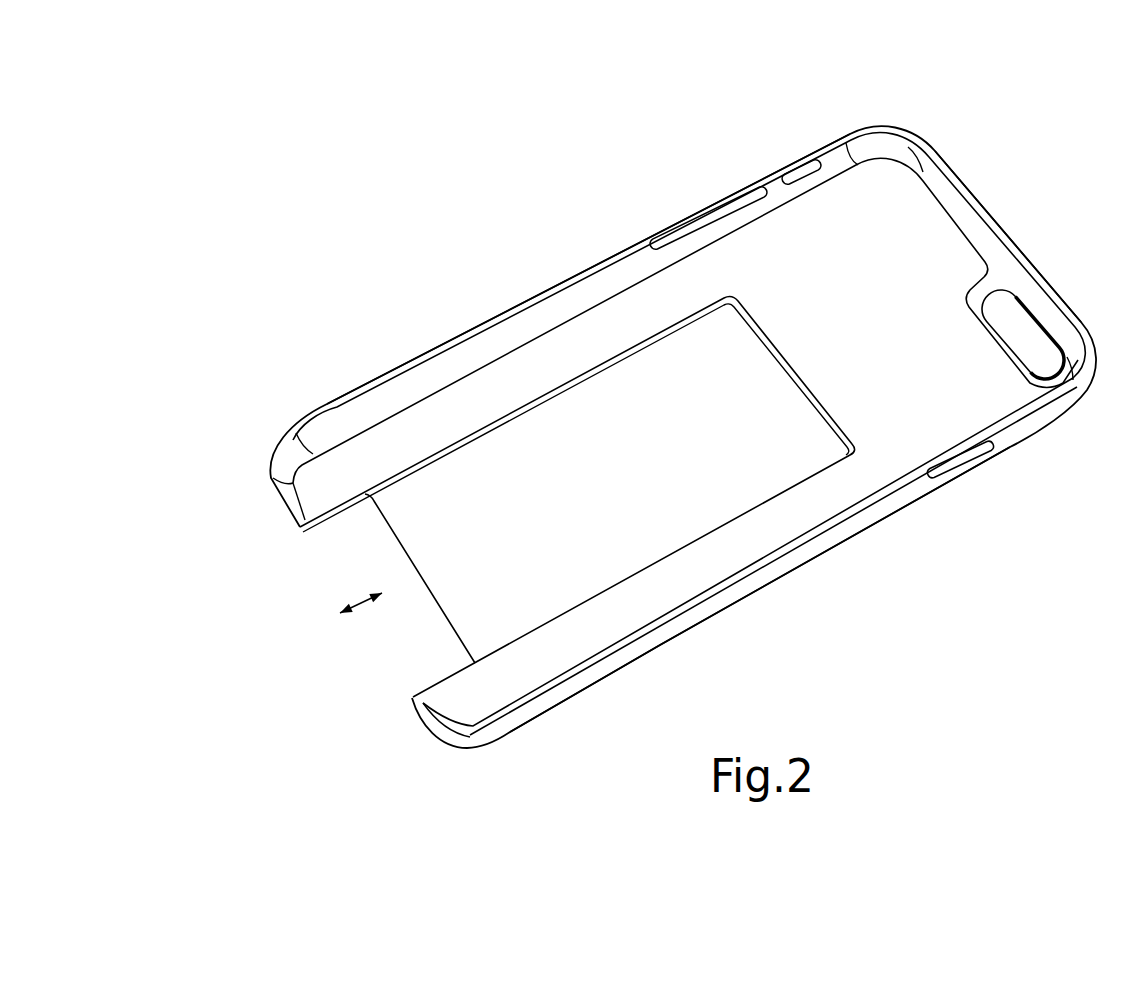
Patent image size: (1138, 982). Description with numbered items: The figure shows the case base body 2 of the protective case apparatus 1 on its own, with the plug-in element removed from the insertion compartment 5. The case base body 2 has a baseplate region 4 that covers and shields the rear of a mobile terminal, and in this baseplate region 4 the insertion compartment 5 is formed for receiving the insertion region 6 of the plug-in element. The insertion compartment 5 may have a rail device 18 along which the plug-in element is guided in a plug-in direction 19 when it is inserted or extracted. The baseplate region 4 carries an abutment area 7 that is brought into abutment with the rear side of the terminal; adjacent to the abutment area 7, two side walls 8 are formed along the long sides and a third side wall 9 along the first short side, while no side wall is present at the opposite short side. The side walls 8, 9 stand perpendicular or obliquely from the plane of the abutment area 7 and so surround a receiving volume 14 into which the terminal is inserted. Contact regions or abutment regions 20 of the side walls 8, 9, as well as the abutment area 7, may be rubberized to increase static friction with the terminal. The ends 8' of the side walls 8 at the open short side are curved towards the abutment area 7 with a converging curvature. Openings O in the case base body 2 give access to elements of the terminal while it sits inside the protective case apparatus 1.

The protective case apparatus 1 is at (1067, 137).
The case base body 2 is at (1030, 254).
The baseplate region 4 is at (920, 247).
The insertion compartment 5 is at (790, 343).
The insertion region 6 is at (423, 487).
The abutment area 7 is at (877, 197).
The side wall 8 is at (668, 433).
The end of side wall 8' is at (382, 593).
The third side wall 9 is at (993, 218).
The receiving volume 14 is at (822, 235).
The rail device 18 is at (578, 388).
The plug-in direction 19 is at (360, 612).
The abutment region 20 is at (624, 278).
The opening O is at (723, 207).